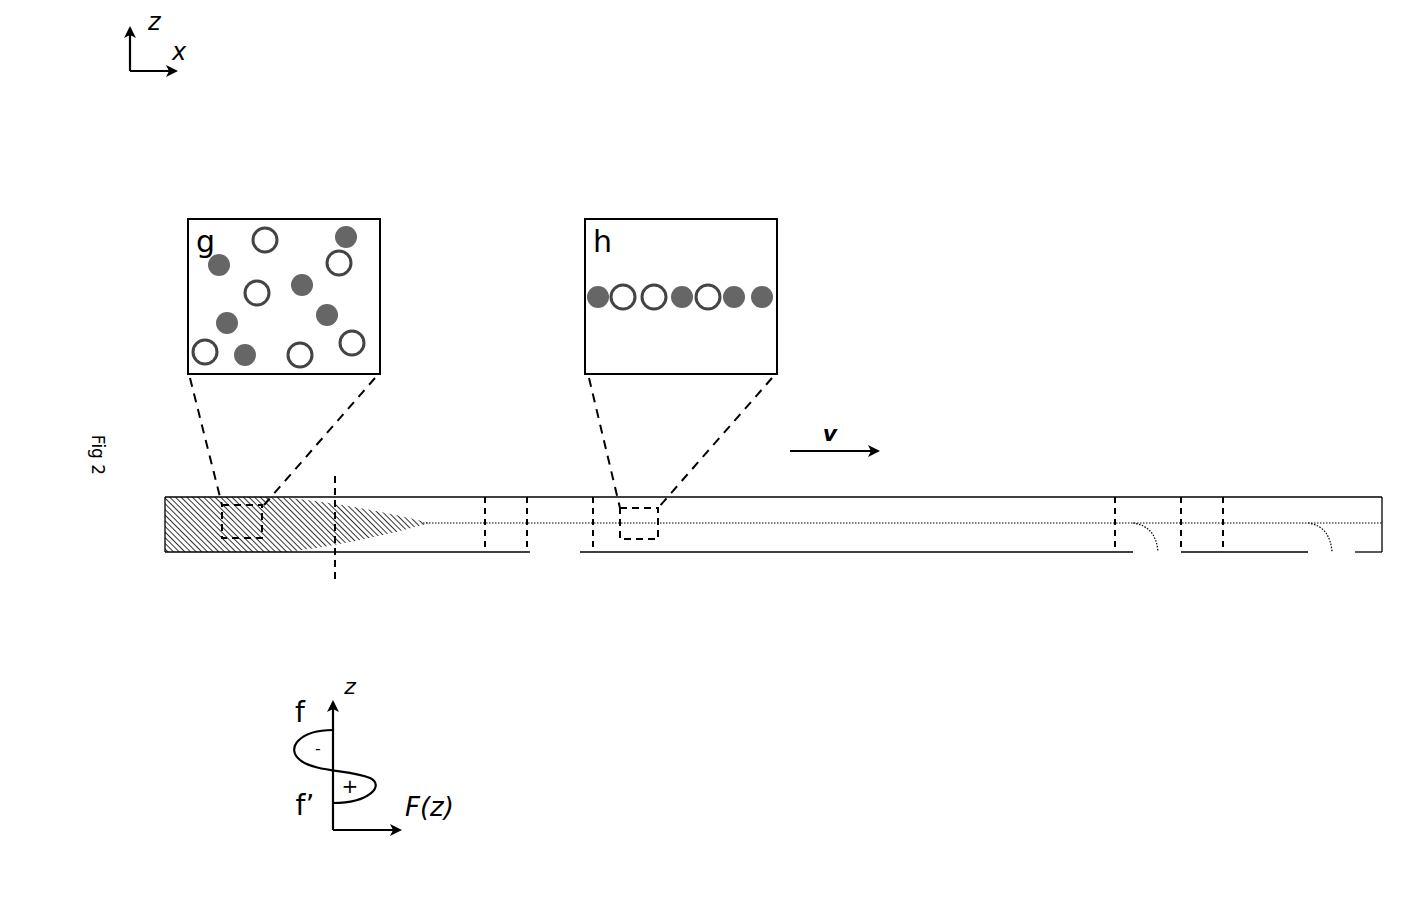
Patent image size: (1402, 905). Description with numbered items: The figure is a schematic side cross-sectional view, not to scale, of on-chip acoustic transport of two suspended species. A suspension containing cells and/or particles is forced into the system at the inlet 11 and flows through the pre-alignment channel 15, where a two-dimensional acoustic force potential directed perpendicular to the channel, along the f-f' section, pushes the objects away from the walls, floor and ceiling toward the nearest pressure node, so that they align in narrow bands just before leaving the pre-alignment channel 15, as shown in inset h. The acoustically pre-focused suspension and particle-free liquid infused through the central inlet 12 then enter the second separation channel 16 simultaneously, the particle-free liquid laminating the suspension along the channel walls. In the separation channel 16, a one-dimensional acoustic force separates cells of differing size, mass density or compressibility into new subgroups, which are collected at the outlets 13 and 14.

The suspension inlet 11 is at (213, 568).
The central inlet 12 is at (552, 568).
The first outlet 13 is at (1158, 562).
The second outlet 14 is at (1333, 562).
The pre-alignment channel 15 is at (414, 540).
The second separation channel 16 is at (848, 540).